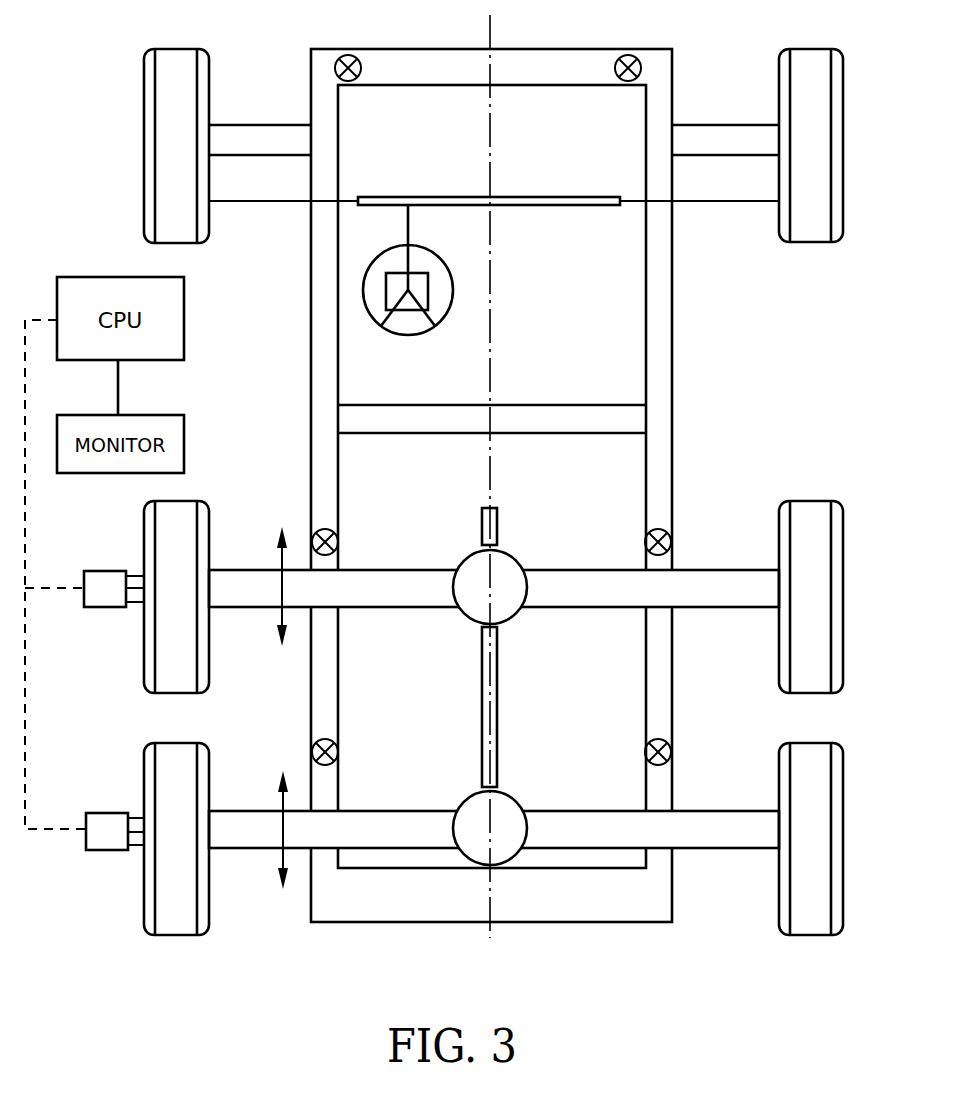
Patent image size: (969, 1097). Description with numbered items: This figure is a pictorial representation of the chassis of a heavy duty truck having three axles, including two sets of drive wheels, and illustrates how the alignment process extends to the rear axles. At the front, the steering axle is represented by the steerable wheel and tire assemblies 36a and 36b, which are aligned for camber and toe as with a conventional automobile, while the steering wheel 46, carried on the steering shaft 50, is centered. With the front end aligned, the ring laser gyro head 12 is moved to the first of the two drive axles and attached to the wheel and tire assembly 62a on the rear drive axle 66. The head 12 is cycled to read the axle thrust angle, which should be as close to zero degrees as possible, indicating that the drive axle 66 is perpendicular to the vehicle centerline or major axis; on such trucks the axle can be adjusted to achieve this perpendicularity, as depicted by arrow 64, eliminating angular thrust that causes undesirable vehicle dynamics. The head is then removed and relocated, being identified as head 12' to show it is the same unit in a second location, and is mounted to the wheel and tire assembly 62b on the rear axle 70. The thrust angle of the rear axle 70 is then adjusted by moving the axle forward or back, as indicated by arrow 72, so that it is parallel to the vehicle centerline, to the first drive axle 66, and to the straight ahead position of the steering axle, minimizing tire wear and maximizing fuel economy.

The steerable wheel and tire assembly 36a is at (173, 49).
The steerable wheel and tire assembly 36b is at (806, 49).
The steering shaft 50 is at (408, 237).
The steering wheel 46 is at (404, 334).
The head 12 is at (99, 570).
The head 12' is at (97, 812).
The rear drive axle 66 is at (370, 569).
The arrow 64 is at (278, 613).
The wheel and tire assembly 62a is at (175, 695).
The rear axle 70 is at (238, 811).
The arrow 72 is at (278, 858).
The wheel and tire assembly 62b is at (175, 937).